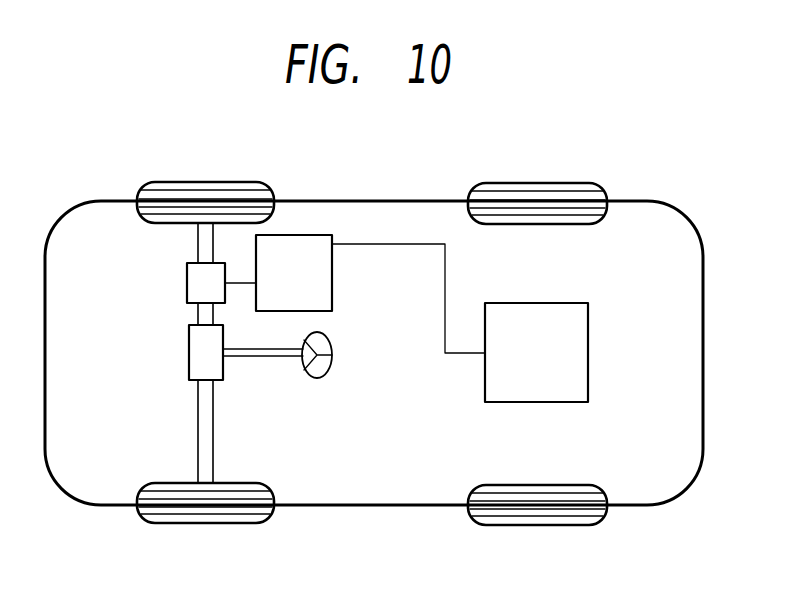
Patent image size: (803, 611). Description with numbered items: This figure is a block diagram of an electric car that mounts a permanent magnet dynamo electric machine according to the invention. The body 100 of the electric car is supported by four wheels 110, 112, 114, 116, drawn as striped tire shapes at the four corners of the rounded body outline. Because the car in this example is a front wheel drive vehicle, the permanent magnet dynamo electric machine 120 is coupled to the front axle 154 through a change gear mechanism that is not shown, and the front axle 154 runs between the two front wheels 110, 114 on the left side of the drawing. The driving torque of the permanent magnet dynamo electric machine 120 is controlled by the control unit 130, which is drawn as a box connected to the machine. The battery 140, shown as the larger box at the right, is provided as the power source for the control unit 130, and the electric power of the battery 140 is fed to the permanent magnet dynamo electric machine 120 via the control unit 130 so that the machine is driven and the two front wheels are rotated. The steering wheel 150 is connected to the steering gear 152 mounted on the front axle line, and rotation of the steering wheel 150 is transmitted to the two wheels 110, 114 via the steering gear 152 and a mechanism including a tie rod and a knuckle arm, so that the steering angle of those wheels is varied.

The body 100 is at (385, 200).
The wheel 110 is at (173, 189).
The wheel 112 is at (557, 190).
The wheel 114 is at (193, 513).
The wheel 116 is at (556, 512).
The permanent magnet dynamo electric machine 120 is at (186, 270).
The control unit 130 is at (333, 282).
The battery 140 is at (547, 313).
The steering wheel 150 is at (332, 366).
The steering gear 152 is at (188, 363).
The front axle 154 is at (191, 311).